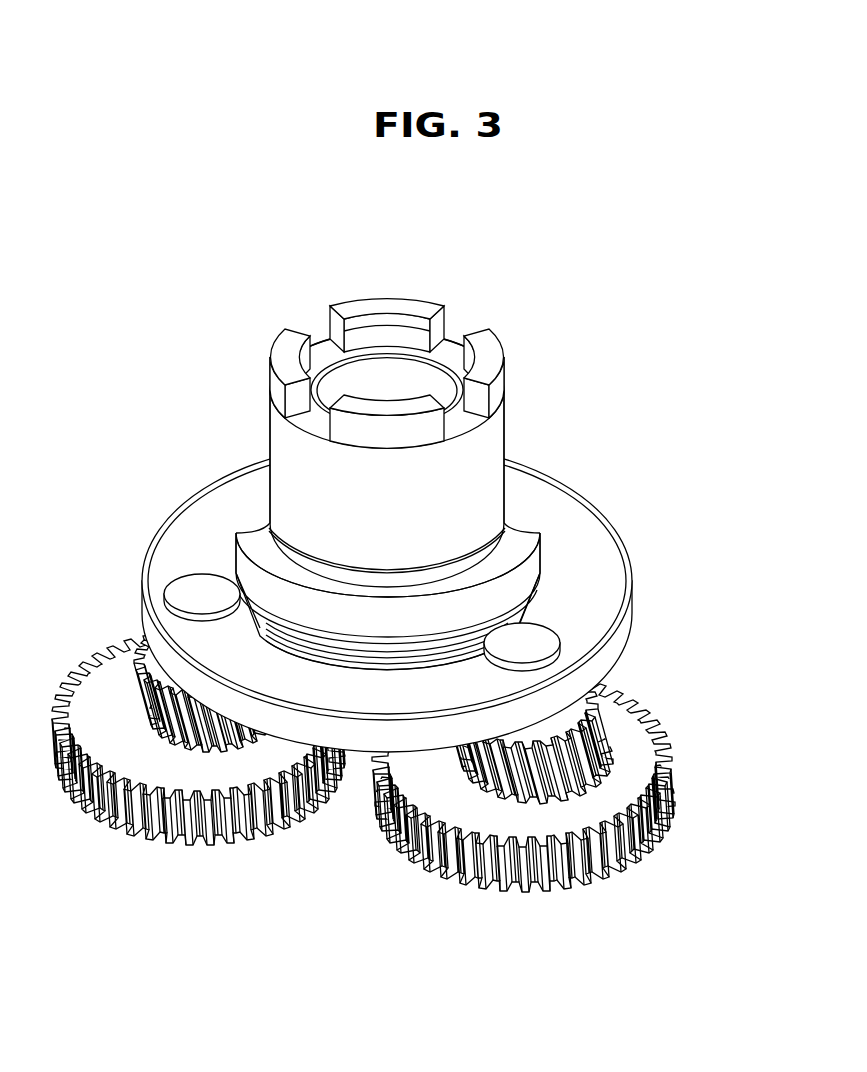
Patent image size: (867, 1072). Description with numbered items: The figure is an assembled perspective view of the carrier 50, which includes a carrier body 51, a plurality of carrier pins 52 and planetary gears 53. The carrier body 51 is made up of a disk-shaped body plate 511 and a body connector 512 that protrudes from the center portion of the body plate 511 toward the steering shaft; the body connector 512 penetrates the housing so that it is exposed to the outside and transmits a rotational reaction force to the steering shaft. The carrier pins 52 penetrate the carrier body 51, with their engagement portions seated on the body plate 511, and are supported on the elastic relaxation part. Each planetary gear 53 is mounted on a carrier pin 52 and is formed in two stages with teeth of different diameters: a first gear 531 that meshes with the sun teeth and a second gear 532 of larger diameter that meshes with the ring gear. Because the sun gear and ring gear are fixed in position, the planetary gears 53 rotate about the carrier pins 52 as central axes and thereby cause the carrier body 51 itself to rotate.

The carrier 50 is at (759, 233).
The carrier body 51 is at (408, 525).
The body plate 511 is at (563, 508).
The body connector 512 is at (617, 450).
The carrier pin 52 is at (535, 637).
The planetary gear 53 is at (433, 757).
The first gear 531 is at (571, 750).
The second gear 532 is at (668, 817).